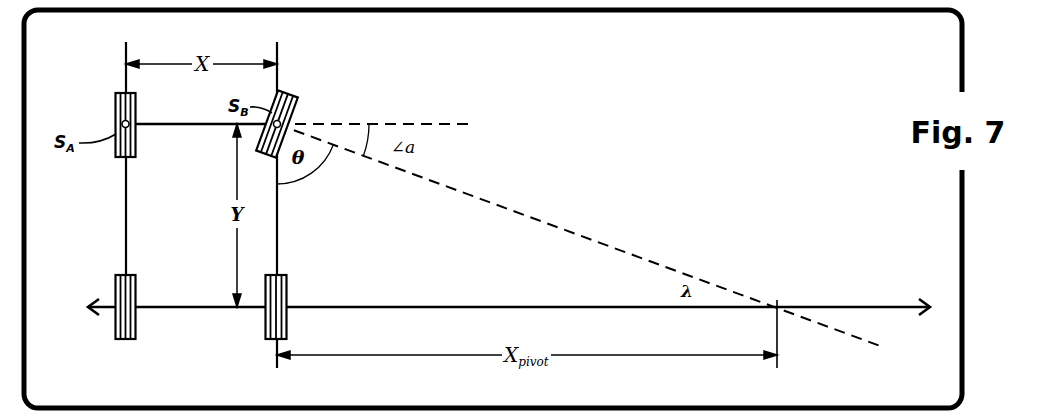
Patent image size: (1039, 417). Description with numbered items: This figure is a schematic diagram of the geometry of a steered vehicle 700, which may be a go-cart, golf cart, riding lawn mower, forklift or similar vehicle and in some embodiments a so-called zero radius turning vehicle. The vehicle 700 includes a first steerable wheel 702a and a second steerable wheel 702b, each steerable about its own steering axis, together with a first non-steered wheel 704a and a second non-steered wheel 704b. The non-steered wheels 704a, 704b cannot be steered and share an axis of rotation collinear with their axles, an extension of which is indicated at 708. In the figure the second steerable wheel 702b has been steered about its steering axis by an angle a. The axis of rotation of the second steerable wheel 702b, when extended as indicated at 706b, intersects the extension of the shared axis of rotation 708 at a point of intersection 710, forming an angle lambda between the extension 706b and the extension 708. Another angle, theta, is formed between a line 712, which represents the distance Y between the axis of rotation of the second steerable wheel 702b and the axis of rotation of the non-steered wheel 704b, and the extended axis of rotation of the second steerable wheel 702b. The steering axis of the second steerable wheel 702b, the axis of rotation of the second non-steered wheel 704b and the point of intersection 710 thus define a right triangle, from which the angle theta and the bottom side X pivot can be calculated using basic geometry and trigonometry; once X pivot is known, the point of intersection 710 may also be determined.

The vehicle 700 is at (126, 200).
The first steerable wheel 702a is at (115, 123).
The second steerable wheel 702b is at (297, 102).
The first non-steered wheel 704a is at (115, 290).
The second non-steered wheel 704b is at (287, 290).
The extension of axis of rotation of second steerable wheel 706b is at (540, 221).
The extension of shared axis of rotation 708 is at (893, 304).
The point of intersection 710 is at (780, 301).
The line 712 is at (278, 233).